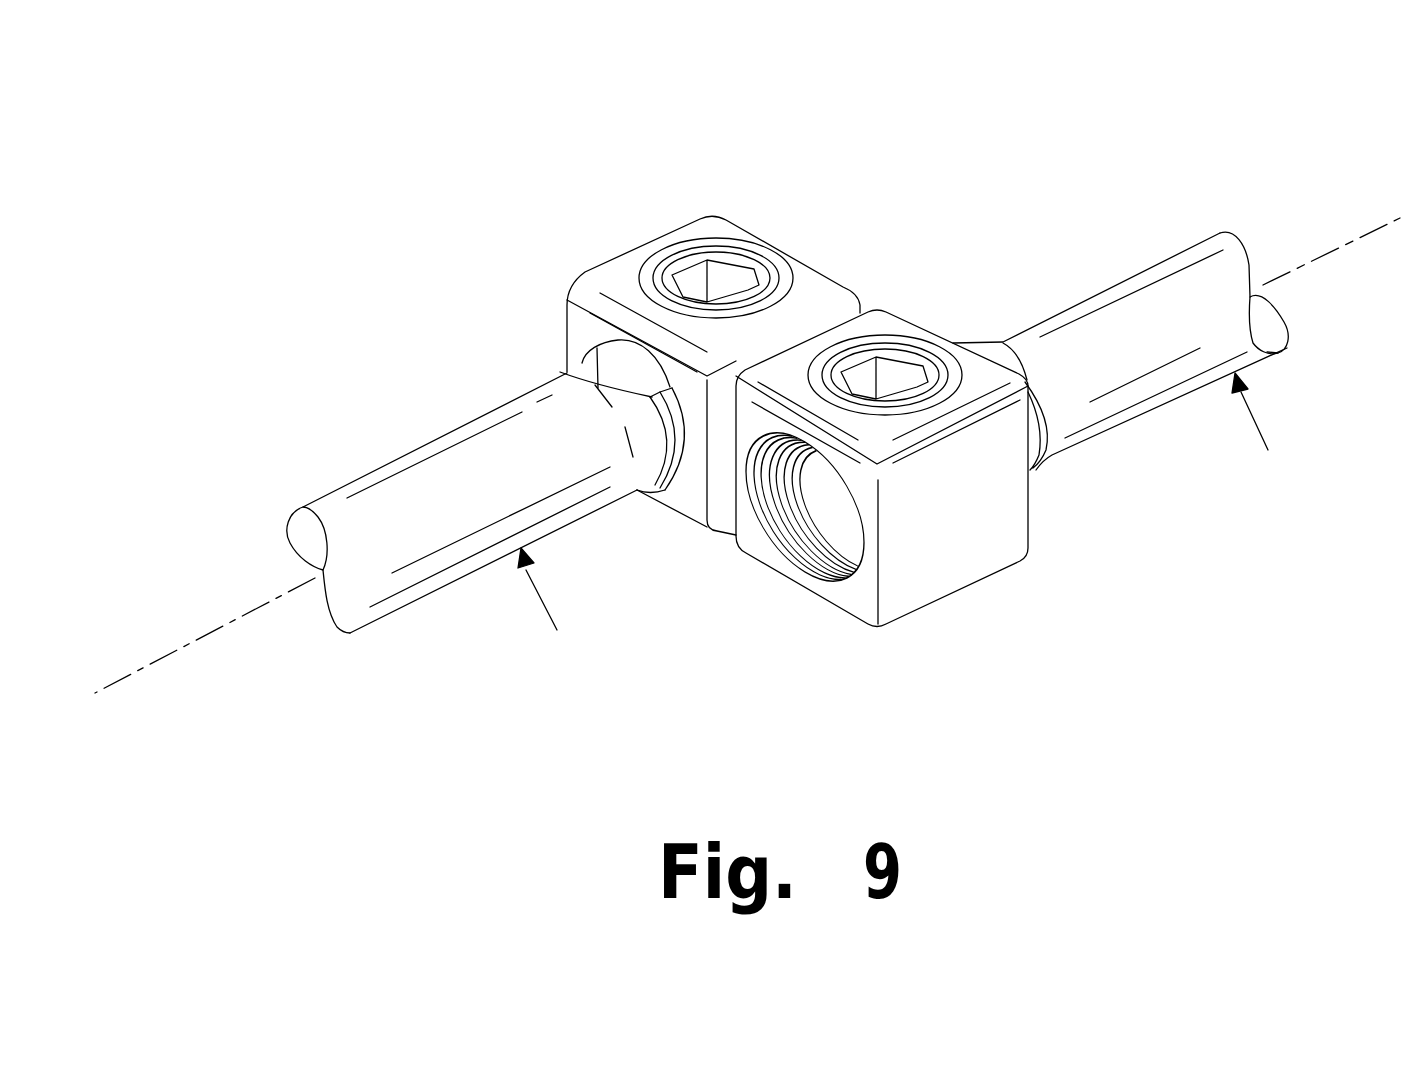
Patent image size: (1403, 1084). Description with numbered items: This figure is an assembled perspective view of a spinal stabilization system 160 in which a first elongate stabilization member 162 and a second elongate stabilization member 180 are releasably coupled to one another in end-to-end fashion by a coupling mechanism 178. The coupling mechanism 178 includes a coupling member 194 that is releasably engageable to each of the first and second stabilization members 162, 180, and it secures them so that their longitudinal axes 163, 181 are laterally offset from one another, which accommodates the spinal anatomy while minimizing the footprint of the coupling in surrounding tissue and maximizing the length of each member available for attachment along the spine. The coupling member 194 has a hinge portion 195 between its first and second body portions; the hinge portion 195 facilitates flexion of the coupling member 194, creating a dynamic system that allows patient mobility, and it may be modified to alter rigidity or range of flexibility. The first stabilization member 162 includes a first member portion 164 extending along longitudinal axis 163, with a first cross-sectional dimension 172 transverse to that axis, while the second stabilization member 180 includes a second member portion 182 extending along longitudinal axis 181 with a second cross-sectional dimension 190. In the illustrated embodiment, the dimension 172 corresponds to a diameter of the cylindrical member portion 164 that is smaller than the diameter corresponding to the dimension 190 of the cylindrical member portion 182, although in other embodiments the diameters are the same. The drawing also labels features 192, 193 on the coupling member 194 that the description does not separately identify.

The spinal stabilization system 160 is at (1052, 577).
The first elongate stabilization member 162 is at (587, 523).
The longitudinal axis 163 is at (185, 648).
The first member portion 164 is at (528, 423).
The first cross-sectional dimension 172 is at (455, 428).
The coupling mechanism 178 is at (770, 208).
The second elongate stabilization member 180 is at (1068, 460).
The longitudinal axis 181 is at (1340, 243).
The second member portion 182 is at (1143, 415).
The second cross-sectional dimension 190 is at (1170, 251).
The first set screw 192 is at (700, 285).
The second set screw 193 is at (906, 366).
The coupling member 194 is at (877, 627).
The hinge portion 195 is at (871, 306).